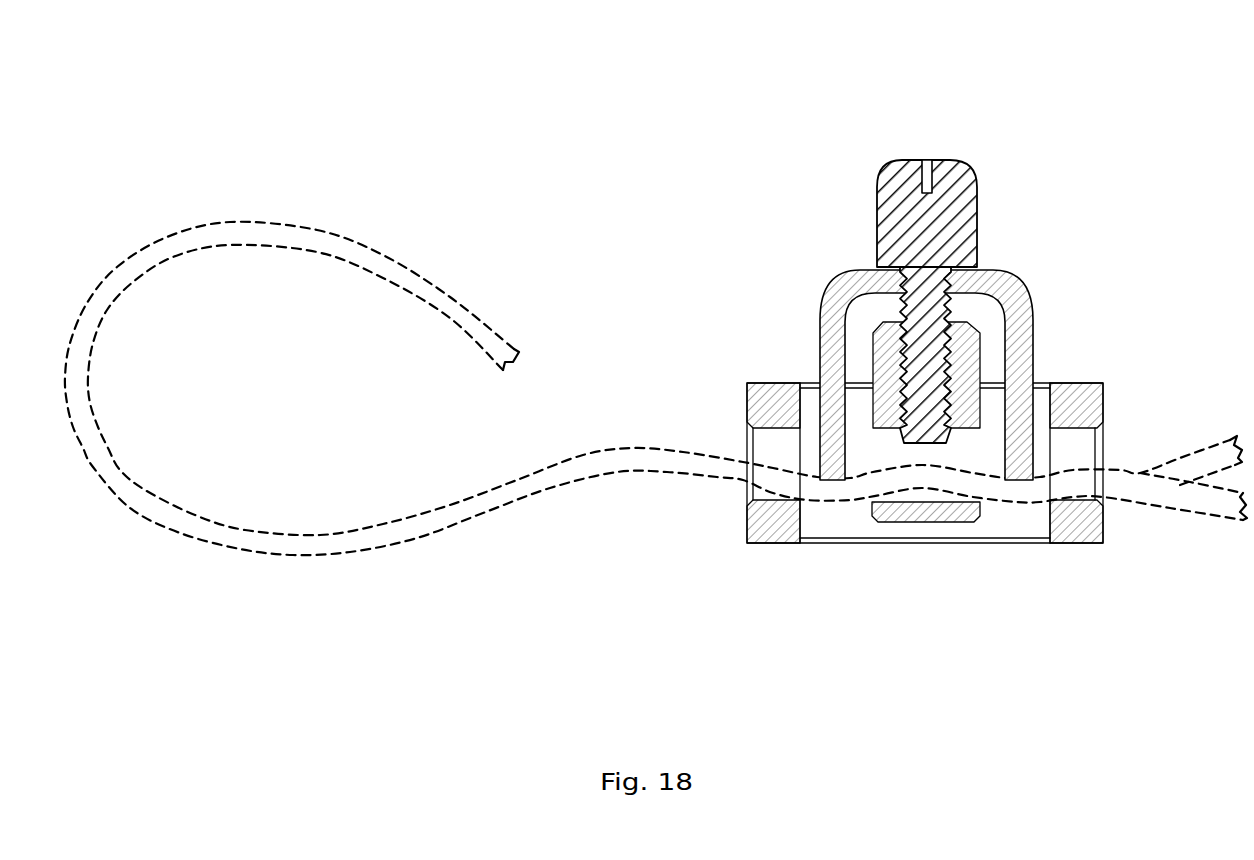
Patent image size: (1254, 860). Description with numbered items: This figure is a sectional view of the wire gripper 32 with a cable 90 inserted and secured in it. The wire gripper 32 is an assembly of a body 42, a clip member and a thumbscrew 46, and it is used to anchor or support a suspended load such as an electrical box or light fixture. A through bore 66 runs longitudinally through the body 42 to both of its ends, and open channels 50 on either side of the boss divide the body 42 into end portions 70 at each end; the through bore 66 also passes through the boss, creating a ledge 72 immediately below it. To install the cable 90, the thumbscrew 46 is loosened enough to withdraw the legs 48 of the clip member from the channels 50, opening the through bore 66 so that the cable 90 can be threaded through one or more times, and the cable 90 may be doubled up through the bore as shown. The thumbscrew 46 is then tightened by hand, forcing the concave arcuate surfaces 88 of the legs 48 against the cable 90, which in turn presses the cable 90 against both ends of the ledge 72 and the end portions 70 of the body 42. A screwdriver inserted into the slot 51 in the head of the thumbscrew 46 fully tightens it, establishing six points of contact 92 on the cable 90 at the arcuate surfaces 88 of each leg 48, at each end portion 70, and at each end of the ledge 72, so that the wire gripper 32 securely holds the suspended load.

The wire gripper 32 is at (1038, 167).
The body 42 is at (1104, 538).
The thumbscrew 46 is at (877, 228).
The legs 48 is at (1035, 343).
The channels 50 is at (1042, 410).
The slot 51 is at (926, 160).
The through bore 66 is at (1078, 450).
The end portions 70 is at (765, 544).
The ledge 72 is at (920, 523).
The concave arcuate surface 88 is at (1025, 481).
The cable 90 is at (294, 545).
The points of contact 92 is at (802, 498).